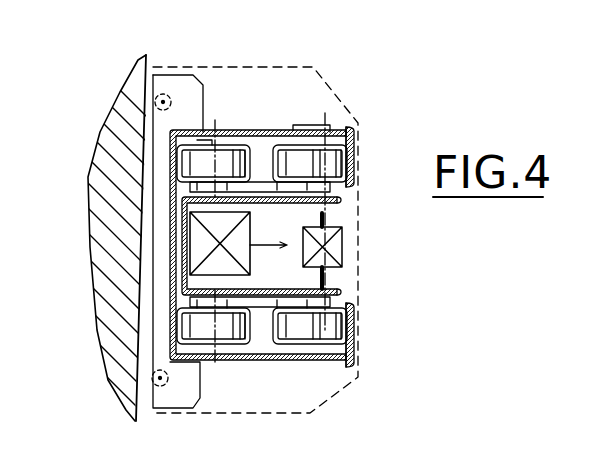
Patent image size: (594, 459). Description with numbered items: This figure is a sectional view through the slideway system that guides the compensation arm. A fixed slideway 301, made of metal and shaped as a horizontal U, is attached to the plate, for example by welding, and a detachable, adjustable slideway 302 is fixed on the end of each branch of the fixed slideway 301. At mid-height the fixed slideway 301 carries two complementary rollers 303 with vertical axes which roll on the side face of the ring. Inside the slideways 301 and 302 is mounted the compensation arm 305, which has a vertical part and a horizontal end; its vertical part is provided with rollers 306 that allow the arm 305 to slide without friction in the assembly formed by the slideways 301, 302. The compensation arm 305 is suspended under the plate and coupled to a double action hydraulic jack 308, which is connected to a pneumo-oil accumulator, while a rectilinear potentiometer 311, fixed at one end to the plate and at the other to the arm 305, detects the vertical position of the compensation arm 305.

The fixed slideway 301 is at (232, 133).
The detachable adjustable slideway 302 is at (357, 170).
The complementary rollers 303 is at (160, 92).
The compensation arm 305 is at (185, 218).
The rollers 306 is at (357, 150).
The double action hydraulic jack 308 is at (200, 245).
The rectilinear potentiometer 311 is at (343, 253).